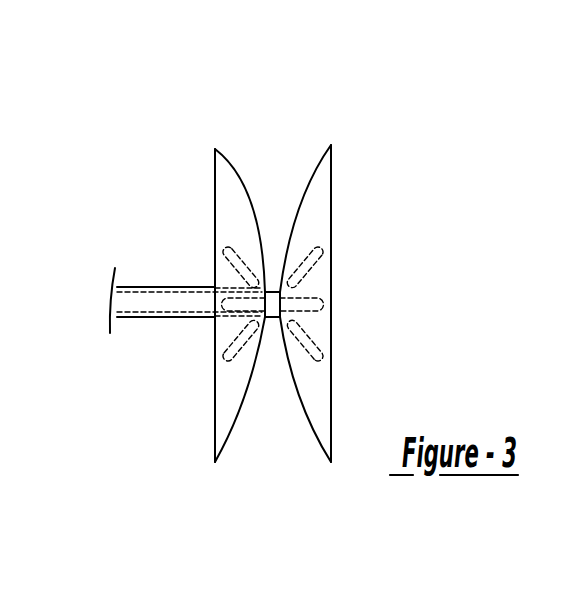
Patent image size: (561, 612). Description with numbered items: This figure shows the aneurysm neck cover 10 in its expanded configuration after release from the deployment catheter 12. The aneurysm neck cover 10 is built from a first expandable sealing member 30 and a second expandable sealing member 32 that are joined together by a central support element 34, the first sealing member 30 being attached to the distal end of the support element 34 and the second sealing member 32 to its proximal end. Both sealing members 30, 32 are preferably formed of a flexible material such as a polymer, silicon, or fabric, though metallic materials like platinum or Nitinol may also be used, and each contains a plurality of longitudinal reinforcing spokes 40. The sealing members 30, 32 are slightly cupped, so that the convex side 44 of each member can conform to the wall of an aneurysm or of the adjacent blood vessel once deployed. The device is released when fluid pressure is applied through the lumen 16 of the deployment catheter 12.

The aneurysm neck cover 10 is at (269, 289).
The deployment catheter 12 is at (186, 298).
The lumen 16 is at (153, 300).
The first expandable sealing member 30 is at (333, 145).
The second expandable sealing member 32 is at (215, 150).
The support element 34 is at (273, 318).
The longitudinal reinforcing spokes 40 is at (227, 357).
The convex side 44 is at (308, 168).